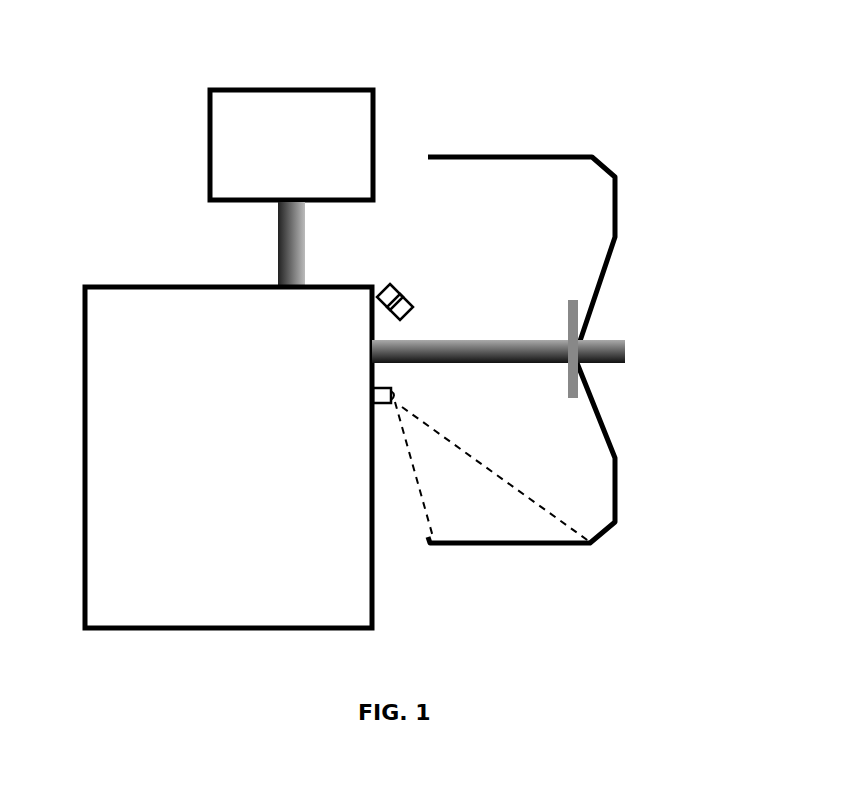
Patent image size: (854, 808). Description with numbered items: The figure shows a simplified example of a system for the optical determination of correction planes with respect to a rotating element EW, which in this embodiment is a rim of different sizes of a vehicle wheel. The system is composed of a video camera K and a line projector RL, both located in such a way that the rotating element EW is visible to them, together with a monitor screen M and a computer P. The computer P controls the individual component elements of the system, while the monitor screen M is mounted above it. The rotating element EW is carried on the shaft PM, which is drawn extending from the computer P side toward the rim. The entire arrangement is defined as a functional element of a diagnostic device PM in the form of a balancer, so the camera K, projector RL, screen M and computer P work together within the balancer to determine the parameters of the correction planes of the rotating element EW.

The diagnostic device PM is at (88, 83).
The monitor screen M is at (309, 147).
The computer P is at (208, 413).
The rotating element EW is at (529, 298).
The video camera K is at (445, 252).
The line projector RL is at (481, 415).
The shaft shaft PM is at (543, 357).